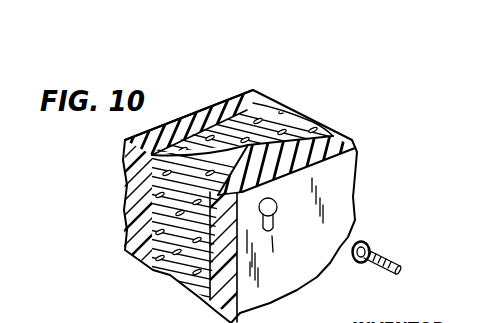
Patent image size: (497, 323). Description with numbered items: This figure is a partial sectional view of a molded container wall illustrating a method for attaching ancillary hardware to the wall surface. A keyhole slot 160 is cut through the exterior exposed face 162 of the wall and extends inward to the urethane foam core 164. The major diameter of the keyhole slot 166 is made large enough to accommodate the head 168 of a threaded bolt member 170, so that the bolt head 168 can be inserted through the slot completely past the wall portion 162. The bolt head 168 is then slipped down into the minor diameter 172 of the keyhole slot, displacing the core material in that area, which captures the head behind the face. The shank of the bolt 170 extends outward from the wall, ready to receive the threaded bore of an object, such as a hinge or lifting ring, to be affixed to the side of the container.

The keyhole slot 160 is at (282, 204).
The exterior exposed face 162 is at (354, 155).
The urethane foam core 164 is at (204, 125).
The major diameter of the keyhole slot 166 is at (175, 274).
The head of threaded bolt member 168 is at (372, 249).
The threaded bolt member 170 is at (374, 270).
The minor diameter of the keyhole slot 172 is at (357, 248).